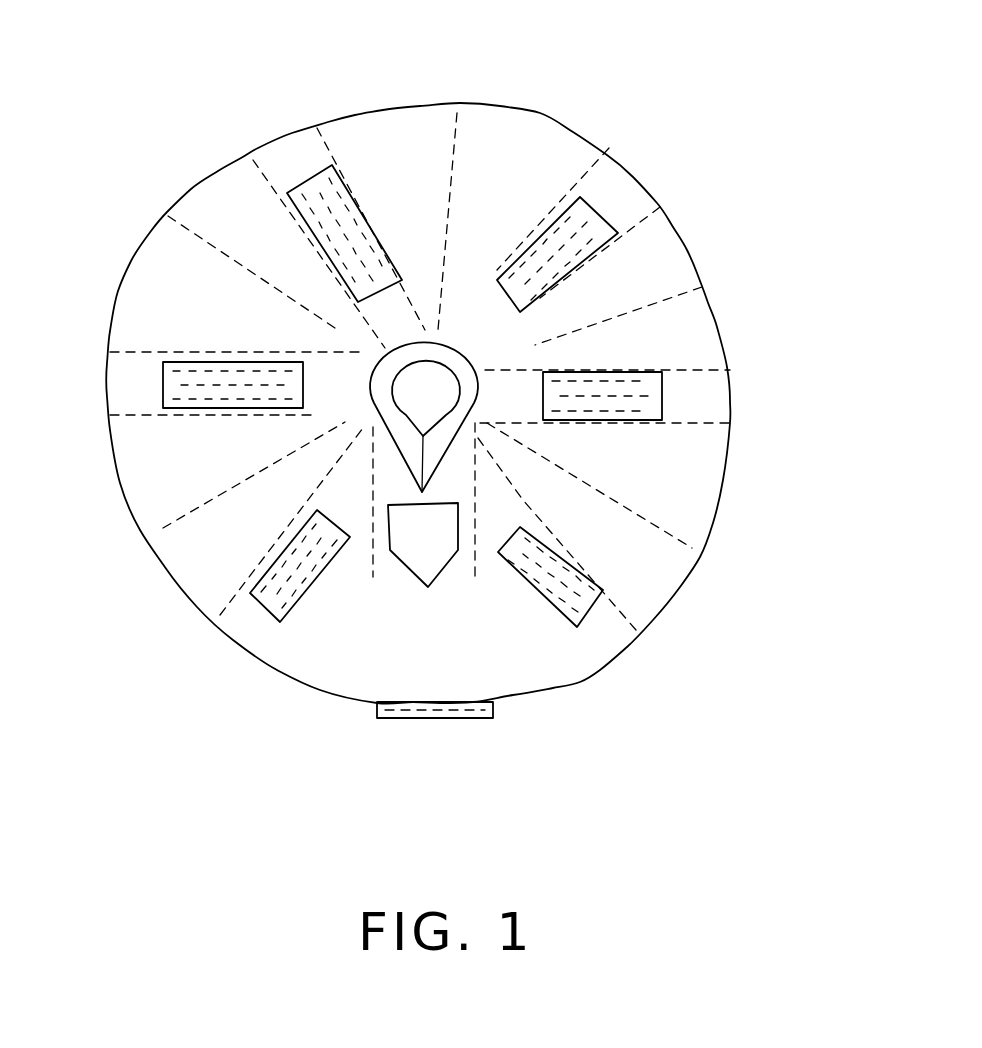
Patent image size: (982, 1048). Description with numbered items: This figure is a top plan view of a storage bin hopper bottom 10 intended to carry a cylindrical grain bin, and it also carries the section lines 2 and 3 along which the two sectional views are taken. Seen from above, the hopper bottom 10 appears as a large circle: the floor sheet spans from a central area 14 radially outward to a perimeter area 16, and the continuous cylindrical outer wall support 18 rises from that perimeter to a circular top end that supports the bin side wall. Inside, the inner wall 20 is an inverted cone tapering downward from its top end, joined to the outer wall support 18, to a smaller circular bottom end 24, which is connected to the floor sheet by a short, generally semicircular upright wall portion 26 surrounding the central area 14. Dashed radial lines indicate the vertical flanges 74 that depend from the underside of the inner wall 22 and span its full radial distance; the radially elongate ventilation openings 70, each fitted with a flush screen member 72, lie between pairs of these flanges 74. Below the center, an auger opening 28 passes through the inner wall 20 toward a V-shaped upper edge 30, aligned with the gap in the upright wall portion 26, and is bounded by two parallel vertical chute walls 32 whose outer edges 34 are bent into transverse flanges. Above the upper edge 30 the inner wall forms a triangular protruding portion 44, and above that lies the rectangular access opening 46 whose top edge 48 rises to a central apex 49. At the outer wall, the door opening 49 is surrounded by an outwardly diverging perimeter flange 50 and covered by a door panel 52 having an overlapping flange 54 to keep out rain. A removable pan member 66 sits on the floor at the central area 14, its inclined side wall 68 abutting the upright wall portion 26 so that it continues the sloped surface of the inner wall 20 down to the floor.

The hopper bottom 10 is at (216, 52).
The central area 14 is at (480, 356).
The perimeter area 16 is at (703, 247).
The outer wall support 18 is at (713, 527).
The inner wall 20 is at (652, 538).
The inner wall 22 is at (640, 613).
The bottom end 24 is at (368, 392).
The upright wall portion 26 is at (395, 354).
The auger opening 28 is at (428, 420).
The upper edge 30 is at (441, 421).
The chute walls 32 is at (473, 486).
The outer edges 34 is at (372, 578).
The protruding portion 44 is at (426, 460).
The access opening 46 is at (445, 568).
The top edge 48 is at (413, 580).
The central apex 49 is at (447, 567).
The perimeter flange 50 is at (493, 705).
The door panel 52 is at (453, 722).
The overlapping flange 54 is at (375, 705).
The pan member 66 is at (428, 381).
The side wall 68 is at (412, 356).
The ventilation openings 70 is at (577, 270).
The screen member 72 is at (583, 233).
The vertical flanges 74 is at (458, 137).
The section line 2- 2 is at (410, 252).
The section line 3- 3 is at (55, 378).